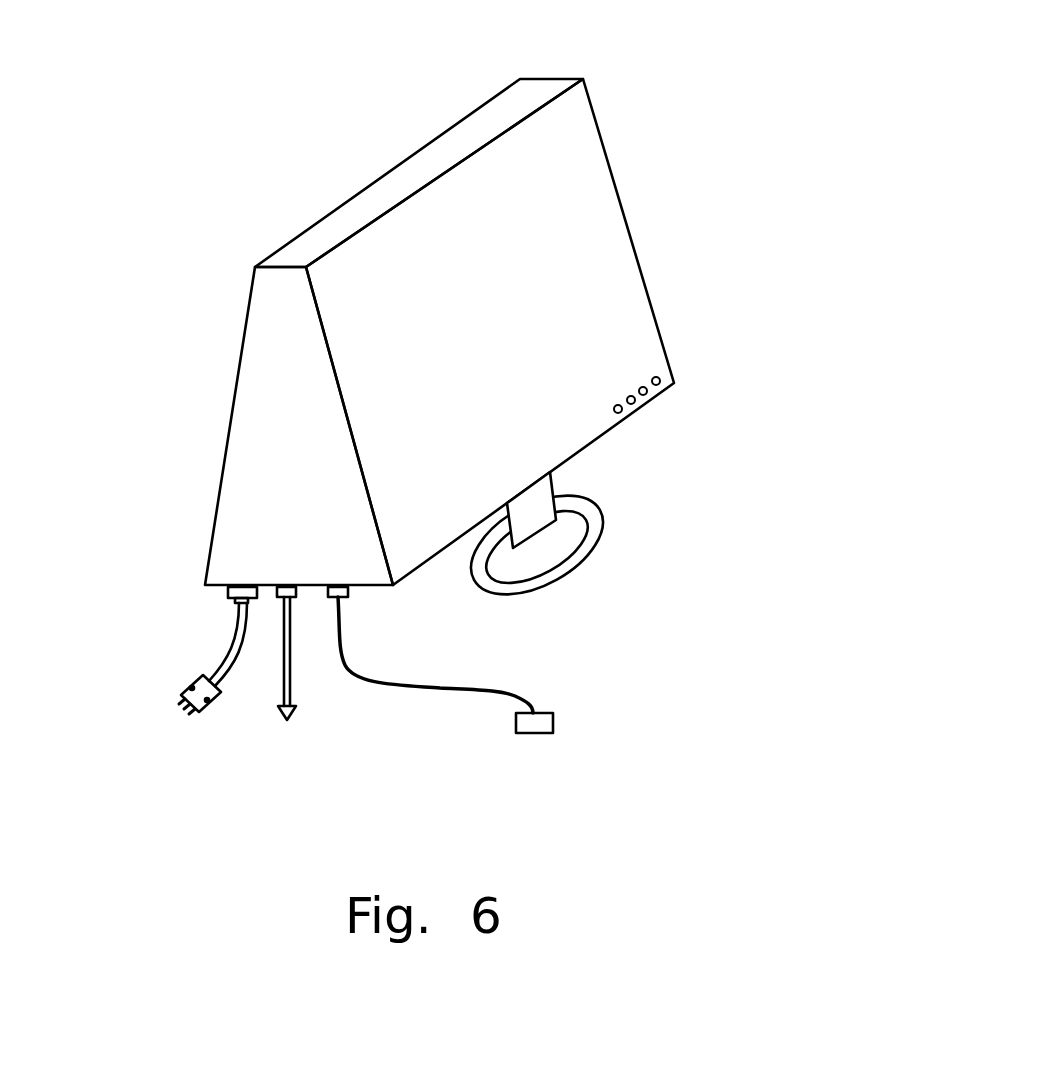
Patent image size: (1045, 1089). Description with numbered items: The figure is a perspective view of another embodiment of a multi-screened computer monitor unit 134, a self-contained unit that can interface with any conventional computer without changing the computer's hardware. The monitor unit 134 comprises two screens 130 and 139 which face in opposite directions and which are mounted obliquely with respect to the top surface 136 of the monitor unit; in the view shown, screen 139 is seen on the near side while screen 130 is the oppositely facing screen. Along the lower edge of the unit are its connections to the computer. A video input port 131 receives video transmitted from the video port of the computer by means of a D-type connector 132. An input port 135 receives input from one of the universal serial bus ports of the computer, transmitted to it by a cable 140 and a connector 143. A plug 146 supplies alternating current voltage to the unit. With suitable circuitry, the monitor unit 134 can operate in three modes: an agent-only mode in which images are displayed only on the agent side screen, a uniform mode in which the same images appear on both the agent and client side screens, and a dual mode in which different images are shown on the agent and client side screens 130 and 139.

The screen 130 is at (232, 415).
The video input port 131 is at (280, 597).
The D-type connector 132 is at (288, 718).
The multi-screened computer monitor unit 134 is at (442, 318).
The input port 135 is at (342, 598).
The top surface 136 is at (377, 198).
The screen 139 is at (603, 212).
The cable 140 is at (440, 688).
The connector 143 is at (534, 733).
The plug 146 is at (185, 682).